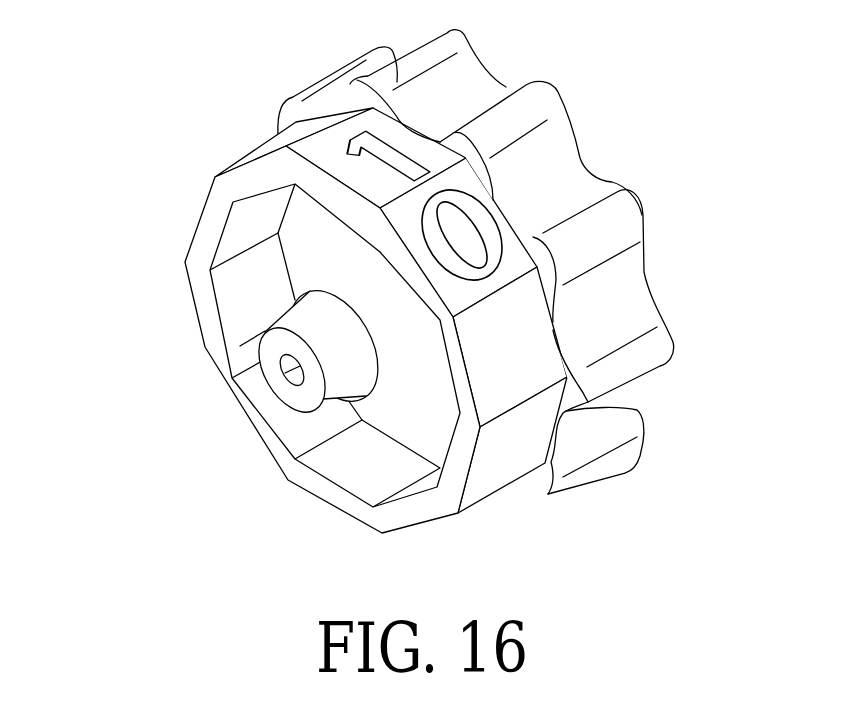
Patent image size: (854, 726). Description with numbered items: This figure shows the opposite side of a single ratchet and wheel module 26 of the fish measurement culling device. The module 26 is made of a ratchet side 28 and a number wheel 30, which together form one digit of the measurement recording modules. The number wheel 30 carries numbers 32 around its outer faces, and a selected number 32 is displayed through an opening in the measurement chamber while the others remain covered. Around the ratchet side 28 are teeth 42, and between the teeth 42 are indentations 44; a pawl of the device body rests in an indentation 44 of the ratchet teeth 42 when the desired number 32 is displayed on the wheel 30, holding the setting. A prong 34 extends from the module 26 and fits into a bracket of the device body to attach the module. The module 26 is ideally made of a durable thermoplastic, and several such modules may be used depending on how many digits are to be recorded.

The ratchet and wheel module 26 is at (376, 283).
The ratchet side 28 is at (506, 262).
The number wheel 30 is at (374, 308).
The number 32 is at (487, 478).
The prong 34 is at (277, 372).
The tooth 42 is at (620, 217).
The indentation 44 is at (560, 174).